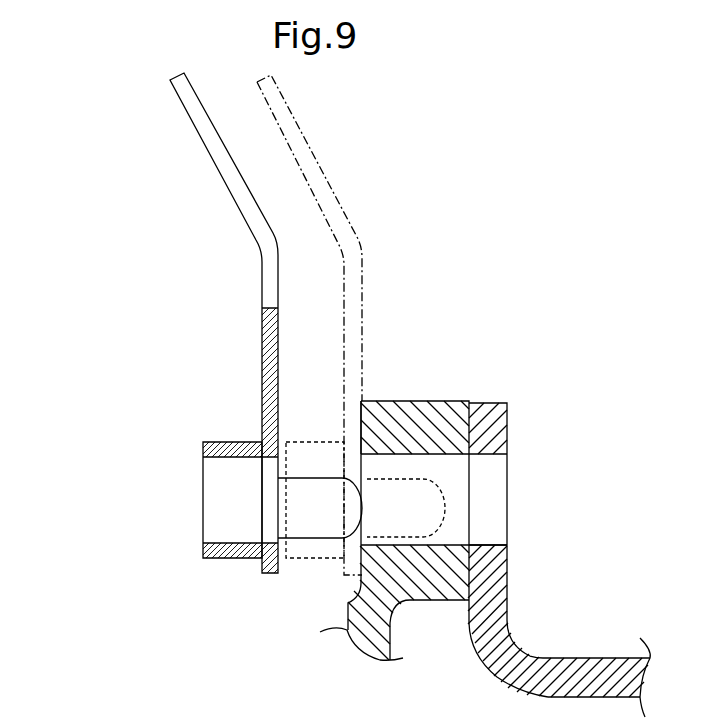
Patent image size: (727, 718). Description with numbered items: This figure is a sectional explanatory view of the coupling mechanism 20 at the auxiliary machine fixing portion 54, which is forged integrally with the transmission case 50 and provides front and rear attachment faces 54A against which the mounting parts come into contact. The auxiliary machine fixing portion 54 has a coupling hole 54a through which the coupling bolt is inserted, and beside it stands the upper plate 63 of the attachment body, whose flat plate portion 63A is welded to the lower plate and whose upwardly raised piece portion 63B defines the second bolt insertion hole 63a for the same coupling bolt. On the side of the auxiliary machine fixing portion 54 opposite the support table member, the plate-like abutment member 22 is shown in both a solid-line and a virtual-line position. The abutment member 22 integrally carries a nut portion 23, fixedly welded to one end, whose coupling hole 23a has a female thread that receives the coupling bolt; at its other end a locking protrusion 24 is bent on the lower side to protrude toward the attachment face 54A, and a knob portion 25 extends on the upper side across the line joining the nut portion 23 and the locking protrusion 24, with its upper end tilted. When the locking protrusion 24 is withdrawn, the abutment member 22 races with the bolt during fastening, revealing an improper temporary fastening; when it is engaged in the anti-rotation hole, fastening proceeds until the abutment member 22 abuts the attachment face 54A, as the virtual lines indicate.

The coupling mechanism 20 is at (278, 325).
The abutment member 22 is at (348, 223).
The nut portion 23 is at (233, 443).
The coupling hole 23a is at (233, 460).
The locking protrusion 24 is at (313, 530).
The knob portion 25 is at (243, 208).
The transmission case 50 is at (413, 474).
The auxiliary machine fixing portion 54 is at (436, 406).
The coupling hole 54a is at (381, 454).
The attachment face 54A is at (361, 417).
The upper plate 63 is at (567, 585).
The flat plate portion 63A is at (567, 663).
The raised piece portion 63B is at (505, 567).
The second bolt insertion hole 63a is at (487, 545).